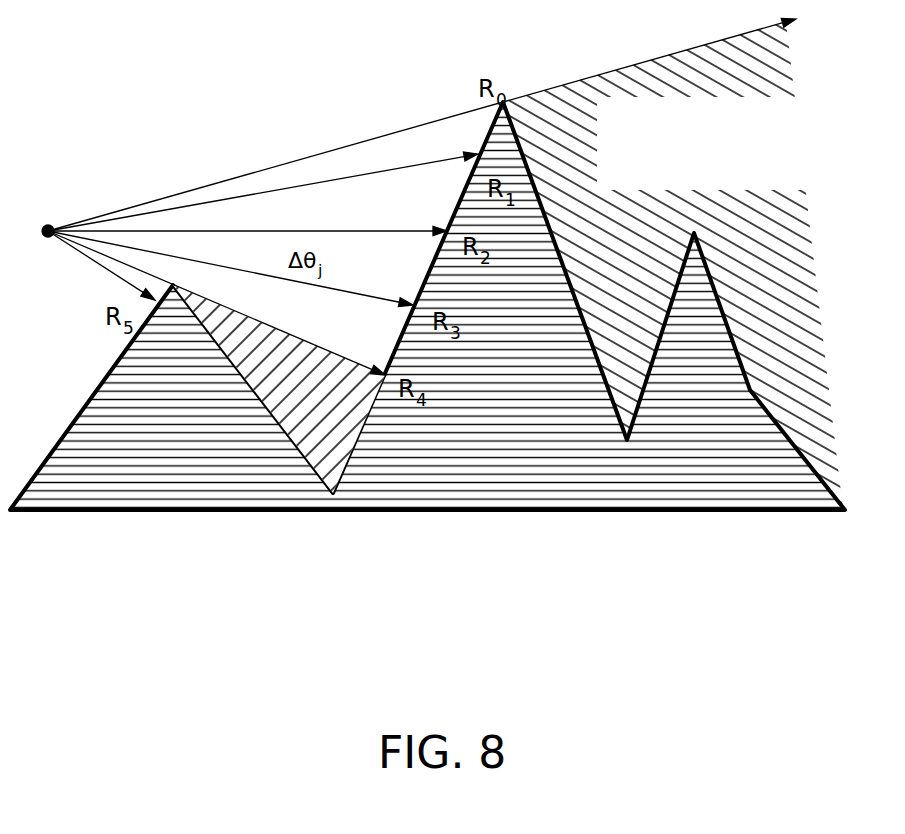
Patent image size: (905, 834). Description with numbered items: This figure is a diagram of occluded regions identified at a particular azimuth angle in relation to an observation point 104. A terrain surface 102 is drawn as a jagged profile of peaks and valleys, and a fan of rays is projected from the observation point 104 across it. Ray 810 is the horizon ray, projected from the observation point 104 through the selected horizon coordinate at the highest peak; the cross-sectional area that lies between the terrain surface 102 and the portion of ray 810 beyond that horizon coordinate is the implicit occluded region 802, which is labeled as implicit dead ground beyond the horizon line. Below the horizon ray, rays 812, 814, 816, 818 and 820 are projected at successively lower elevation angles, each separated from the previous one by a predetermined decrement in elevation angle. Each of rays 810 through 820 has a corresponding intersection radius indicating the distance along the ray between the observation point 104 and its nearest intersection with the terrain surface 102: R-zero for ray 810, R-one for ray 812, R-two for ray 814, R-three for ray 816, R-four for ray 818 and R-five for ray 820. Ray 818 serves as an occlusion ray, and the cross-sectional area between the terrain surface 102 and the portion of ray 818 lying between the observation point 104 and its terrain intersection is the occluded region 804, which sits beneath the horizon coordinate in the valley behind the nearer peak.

The terrain surface 102 is at (88, 402).
The observation point 104 is at (50, 227).
The occluded region 802 is at (798, 76).
The occluded region 804 is at (312, 453).
The ray 810 is at (355, 144).
The ray 812 is at (258, 192).
The ray 814 is at (168, 231).
The ray 816 is at (97, 240).
The ray 818 is at (82, 250).
The ray 820 is at (107, 270).